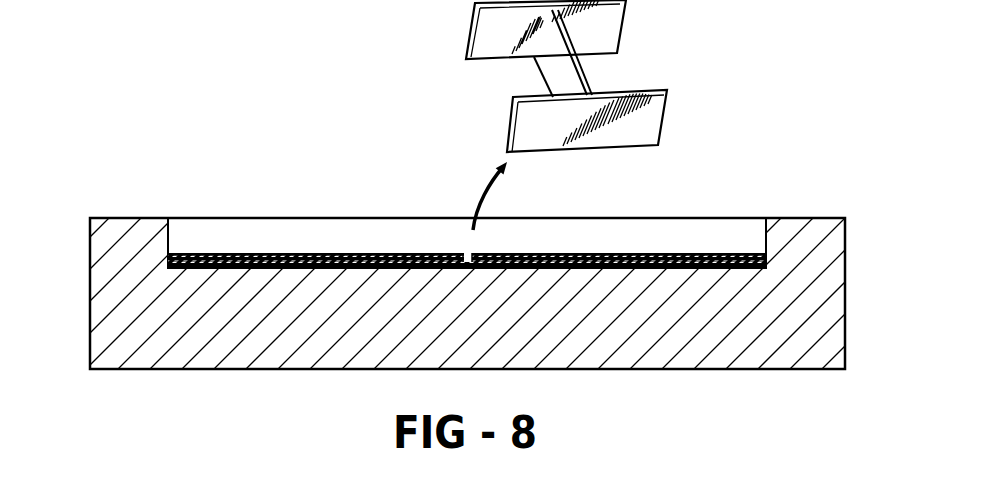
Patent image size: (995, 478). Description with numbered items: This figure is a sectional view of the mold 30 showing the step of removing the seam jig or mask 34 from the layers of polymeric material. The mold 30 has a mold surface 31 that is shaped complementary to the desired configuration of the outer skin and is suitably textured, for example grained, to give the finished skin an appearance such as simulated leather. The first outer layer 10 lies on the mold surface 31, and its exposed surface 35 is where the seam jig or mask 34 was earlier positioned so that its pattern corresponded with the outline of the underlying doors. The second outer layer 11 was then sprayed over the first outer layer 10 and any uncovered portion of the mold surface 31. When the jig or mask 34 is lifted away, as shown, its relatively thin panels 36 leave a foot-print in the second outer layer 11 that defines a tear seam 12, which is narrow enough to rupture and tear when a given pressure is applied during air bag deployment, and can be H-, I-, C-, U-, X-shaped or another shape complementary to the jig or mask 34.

The mold 30 is at (83, 207).
The mold surface 31 is at (220, 252).
The first outer layer 10 is at (270, 252).
The exposed surface 35 is at (335, 252).
The second outer layer 11 is at (373, 252).
The tear seam 12 is at (445, 252).
The seam jig or mask 34 is at (560, 76).
The panels 36 is at (482, 32).